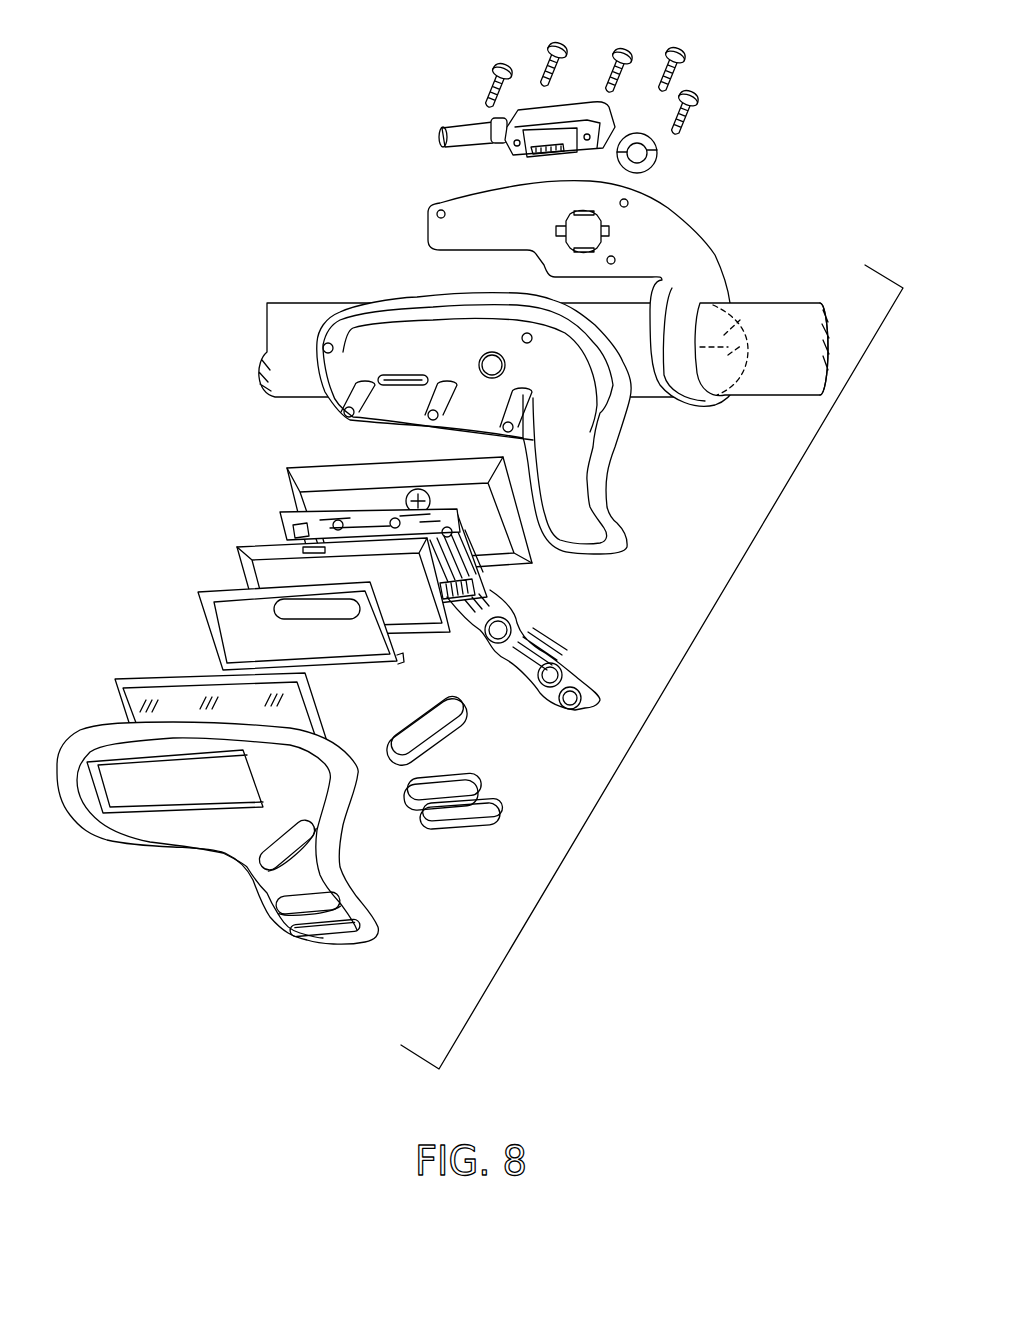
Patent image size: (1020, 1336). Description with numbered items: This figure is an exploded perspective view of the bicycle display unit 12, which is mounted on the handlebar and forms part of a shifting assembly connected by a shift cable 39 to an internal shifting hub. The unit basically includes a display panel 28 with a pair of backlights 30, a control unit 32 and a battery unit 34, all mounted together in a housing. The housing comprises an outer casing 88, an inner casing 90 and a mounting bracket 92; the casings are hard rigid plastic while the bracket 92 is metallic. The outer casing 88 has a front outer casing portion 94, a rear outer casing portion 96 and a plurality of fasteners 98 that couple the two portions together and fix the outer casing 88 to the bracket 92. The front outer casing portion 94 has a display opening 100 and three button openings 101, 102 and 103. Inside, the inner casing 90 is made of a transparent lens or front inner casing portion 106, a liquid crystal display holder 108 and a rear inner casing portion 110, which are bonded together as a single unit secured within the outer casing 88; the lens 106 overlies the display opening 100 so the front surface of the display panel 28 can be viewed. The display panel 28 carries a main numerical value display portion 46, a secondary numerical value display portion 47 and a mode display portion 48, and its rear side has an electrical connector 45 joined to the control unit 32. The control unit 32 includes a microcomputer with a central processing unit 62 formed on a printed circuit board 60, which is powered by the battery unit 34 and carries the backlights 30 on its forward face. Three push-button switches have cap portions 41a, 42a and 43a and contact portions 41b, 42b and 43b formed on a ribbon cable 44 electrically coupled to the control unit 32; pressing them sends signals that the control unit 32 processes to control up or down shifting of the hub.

The bicycle display unit 12 is at (480, 534).
The display panel 28 is at (309, 613).
The backlights 30 is at (395, 518).
The control unit 32 is at (498, 582).
The battery unit 34 is at (437, 490).
The shift cable 39 is at (450, 128).
The cap portion 41a is at (467, 717).
The contact portion 41b is at (518, 635).
The cap portion 42a is at (480, 788).
The contact portion 42b is at (573, 663).
The cap portion 43a is at (503, 813).
The contact portion 43b is at (593, 687).
The ribbon cable 44 is at (545, 650).
The electrical connector 45 is at (405, 650).
The main numerical value display portion 46 is at (222, 620).
The secondary numerical value display portion 47 is at (340, 643).
The mode display portion 48 is at (352, 583).
The printed circuit board 60 is at (344, 482).
The central processing unit 62 is at (445, 562).
The outer casing 88 is at (389, 637).
The inner casing 90 is at (548, 563).
The mounting bracket 92 is at (715, 253).
The front outer casing portion 94 is at (217, 852).
The rear outer casing portion 96 is at (613, 433).
The fasteners 98 is at (558, 45).
The display opening 100 is at (107, 793).
The button opening 101 is at (303, 823).
The button opening 102 is at (310, 897).
The button opening 103 is at (297, 933).
The lens 106 is at (117, 680).
The liquid crystal display holder 108 is at (237, 545).
The rear inner casing portion 110 is at (387, 494).